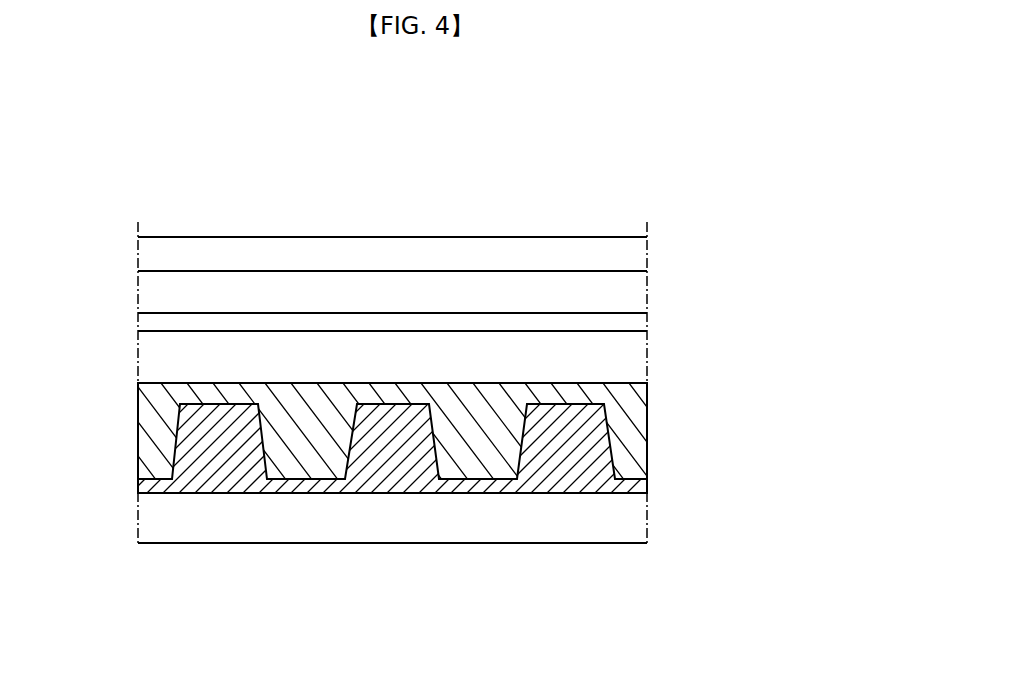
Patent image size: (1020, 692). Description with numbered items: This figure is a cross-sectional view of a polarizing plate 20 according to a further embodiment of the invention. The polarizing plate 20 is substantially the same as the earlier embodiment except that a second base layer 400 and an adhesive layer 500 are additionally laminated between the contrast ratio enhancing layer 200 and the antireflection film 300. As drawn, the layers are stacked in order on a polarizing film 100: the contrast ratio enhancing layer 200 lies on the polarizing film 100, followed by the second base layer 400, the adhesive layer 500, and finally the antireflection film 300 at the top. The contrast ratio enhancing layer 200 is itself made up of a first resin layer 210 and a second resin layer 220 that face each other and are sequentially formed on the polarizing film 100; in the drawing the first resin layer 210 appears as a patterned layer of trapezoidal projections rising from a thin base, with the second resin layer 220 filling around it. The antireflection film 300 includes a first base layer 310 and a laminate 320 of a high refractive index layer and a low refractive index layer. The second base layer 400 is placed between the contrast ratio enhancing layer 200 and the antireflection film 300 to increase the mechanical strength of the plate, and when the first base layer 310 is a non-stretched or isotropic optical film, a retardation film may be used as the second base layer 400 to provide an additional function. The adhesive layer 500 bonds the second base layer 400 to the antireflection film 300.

The polarizing plate 20 is at (695, 171).
The polarizing film 100 is at (635, 521).
The contrast ratio enhancing layer 200 is at (658, 385).
The first resin layer 210 is at (146, 486).
The second resin layer 220 is at (146, 437).
The antireflection film 300 is at (658, 237).
The first base layer 310 is at (142, 283).
The laminate of a high refractive index layer and a low refractive index layer 320 is at (142, 243).
The second base layer 400 is at (628, 357).
The adhesive layer 500 is at (635, 323).